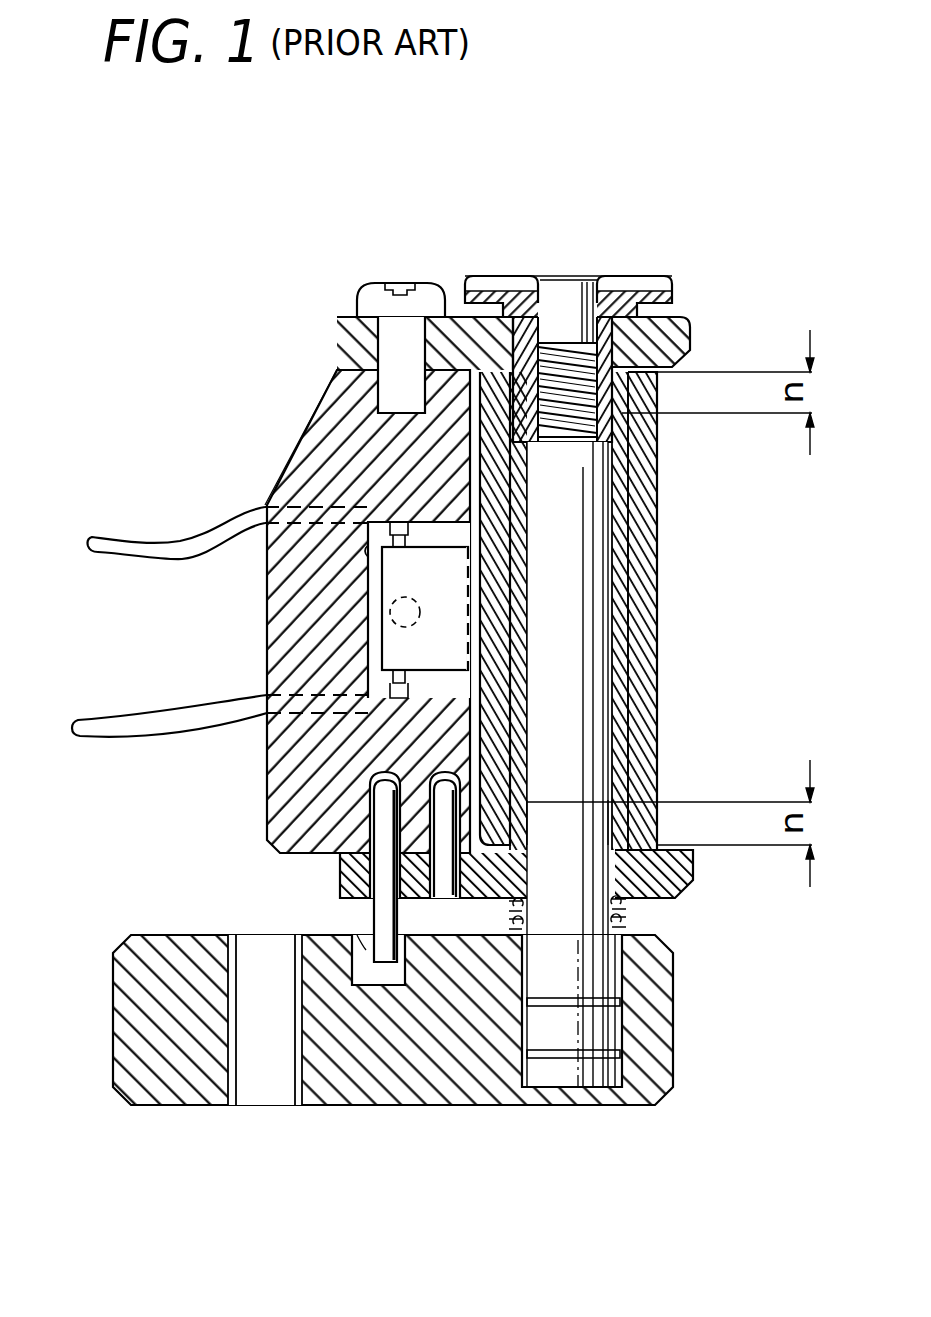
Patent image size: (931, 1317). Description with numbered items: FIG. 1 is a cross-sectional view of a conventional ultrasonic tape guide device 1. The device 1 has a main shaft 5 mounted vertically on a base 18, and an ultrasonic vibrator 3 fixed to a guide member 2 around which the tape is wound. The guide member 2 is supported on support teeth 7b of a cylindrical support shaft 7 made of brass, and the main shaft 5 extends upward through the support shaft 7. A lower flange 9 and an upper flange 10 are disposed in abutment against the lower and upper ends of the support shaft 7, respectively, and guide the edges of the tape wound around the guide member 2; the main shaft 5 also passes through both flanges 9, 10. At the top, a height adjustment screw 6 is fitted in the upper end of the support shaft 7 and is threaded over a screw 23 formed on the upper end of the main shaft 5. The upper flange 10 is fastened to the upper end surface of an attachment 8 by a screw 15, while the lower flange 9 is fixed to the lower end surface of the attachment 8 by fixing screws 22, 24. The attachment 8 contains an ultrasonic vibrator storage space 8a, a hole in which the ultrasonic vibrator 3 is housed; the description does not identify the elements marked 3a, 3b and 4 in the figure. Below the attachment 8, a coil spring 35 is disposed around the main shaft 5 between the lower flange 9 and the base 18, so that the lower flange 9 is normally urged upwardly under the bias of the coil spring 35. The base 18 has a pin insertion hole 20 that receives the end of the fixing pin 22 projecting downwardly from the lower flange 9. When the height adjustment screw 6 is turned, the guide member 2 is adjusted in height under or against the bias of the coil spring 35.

The ultrasonic tape guide device 1 is at (235, 322).
The guide member 2 is at (652, 625).
The ultrasonic vibrator 3 is at (395, 648).
The upper lead wire 3a is at (197, 540).
The lower lead wire 3b is at (200, 722).
The cap assembly 4 is at (686, 300).
The main shaft 5 is at (630, 563).
The height adjustment screw 6 is at (645, 276).
The cylindrical support shaft 7 is at (614, 687).
The support teeth 7b is at (650, 800).
The attachment 8 is at (292, 440).
The ultrasonic vibrator storage space 8a is at (368, 548).
The lower flange 9 is at (688, 886).
The upper flange 10 is at (690, 345).
The screw 15 is at (367, 290).
The base 18 is at (152, 1106).
The pin insertion hole 20 is at (357, 933).
The fixing screw 22 is at (357, 903).
The screw 23 is at (572, 322).
The fixing screw 24 is at (440, 830).
The coil spring 35 is at (630, 918).